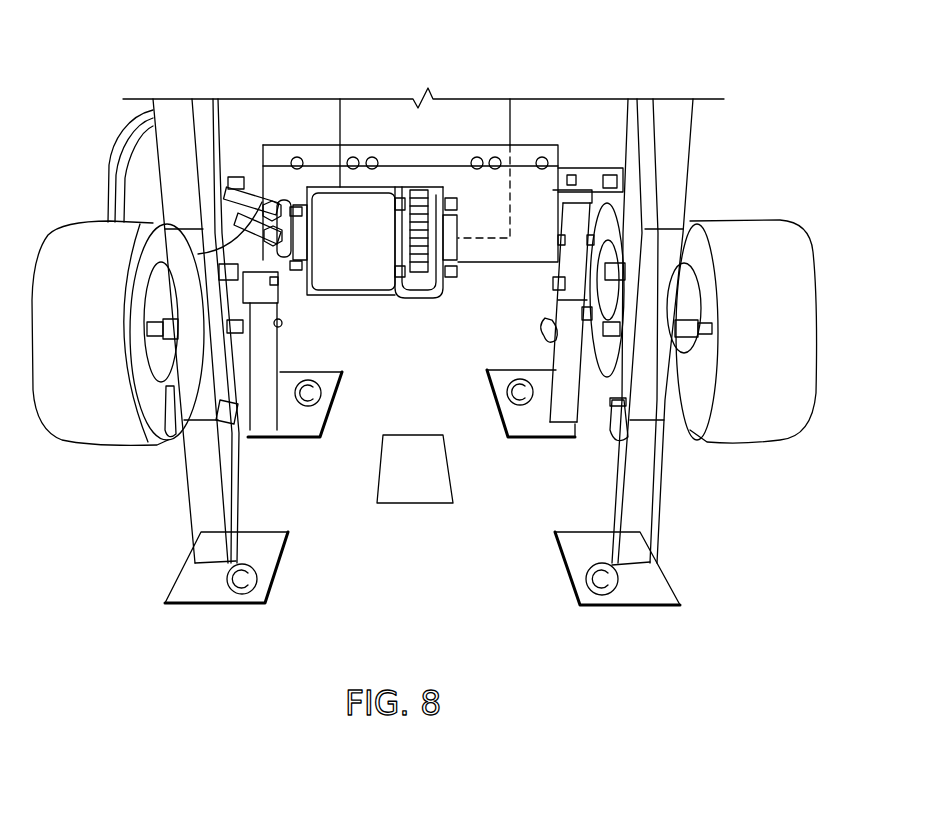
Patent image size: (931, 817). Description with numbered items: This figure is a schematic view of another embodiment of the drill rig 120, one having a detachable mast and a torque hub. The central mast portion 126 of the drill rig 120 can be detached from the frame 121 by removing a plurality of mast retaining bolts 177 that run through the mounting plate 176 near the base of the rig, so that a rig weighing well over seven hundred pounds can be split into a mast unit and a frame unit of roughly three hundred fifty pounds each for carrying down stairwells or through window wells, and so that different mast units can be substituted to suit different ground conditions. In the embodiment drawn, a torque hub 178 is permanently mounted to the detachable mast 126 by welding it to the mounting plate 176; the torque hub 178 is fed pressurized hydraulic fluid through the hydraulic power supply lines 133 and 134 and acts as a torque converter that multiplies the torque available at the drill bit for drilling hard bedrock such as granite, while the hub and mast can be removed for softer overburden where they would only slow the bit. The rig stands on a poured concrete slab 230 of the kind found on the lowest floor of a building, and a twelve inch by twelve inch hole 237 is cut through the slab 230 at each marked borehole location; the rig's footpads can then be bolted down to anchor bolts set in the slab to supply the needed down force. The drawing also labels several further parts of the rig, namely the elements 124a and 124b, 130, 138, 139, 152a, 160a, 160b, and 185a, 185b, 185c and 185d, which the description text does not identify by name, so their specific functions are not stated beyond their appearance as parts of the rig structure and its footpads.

The drill rig 120 is at (189, 357).
The frame 121 is at (118, 110).
The left post 124a is at (170, 175).
The right post 124b is at (678, 175).
The central mast portion 126 is at (443, 158).
The platform 130 is at (434, 488).
The hydraulic power supply line 133 is at (268, 198).
The hydraulic power supply line 134 is at (262, 250).
The mounting hole 138 is at (321, 400).
The fastener 139 is at (316, 385).
The bracket 152a is at (279, 320).
The left base plate 160a is at (257, 597).
The right base plate 160b is at (653, 582).
The mounting plate 176 is at (353, 157).
The mast retaining bolts 177 is at (296, 157).
The torque hub 178 is at (353, 263).
The left wheel pin 185a is at (183, 352).
The right wheel pin 185b is at (655, 353).
The left foot 185c is at (421, 490).
The right foot 185d is at (546, 328).
The concrete slab 230 is at (434, 538).
The holes 237 is at (453, 503).